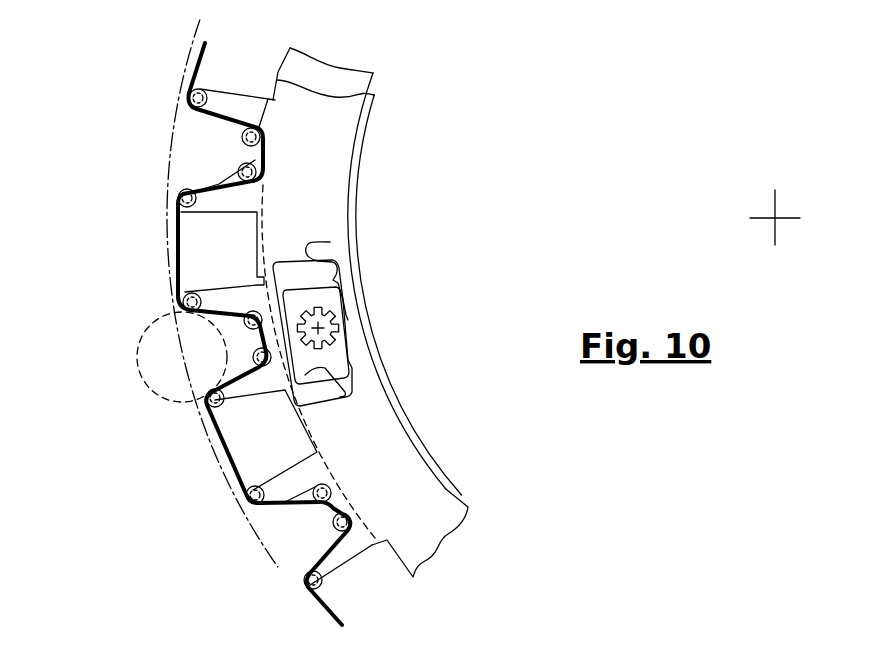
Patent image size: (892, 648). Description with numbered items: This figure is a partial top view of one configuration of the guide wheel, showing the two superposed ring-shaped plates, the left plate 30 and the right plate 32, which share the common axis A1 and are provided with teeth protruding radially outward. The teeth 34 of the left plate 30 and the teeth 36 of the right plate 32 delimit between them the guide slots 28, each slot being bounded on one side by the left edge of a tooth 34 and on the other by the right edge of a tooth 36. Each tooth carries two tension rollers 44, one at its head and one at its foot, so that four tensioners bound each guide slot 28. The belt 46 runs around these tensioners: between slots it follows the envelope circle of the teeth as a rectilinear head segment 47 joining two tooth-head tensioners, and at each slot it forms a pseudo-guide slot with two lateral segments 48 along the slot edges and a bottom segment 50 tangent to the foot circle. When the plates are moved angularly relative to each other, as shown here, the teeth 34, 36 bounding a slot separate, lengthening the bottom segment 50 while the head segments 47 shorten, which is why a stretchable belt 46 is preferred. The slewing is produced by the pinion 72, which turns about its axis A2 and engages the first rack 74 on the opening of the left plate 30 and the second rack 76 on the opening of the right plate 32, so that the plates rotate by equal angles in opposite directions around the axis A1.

The guide slot 28 is at (190, 137).
The left plate 30 is at (455, 502).
The right plate 32 is at (420, 480).
The tooth of the left plate 34 is at (285, 485).
The tooth of the right plate 36 is at (347, 555).
The tension roller 44 is at (304, 586).
The belt 46 is at (179, 223).
The head segment 47 is at (181, 262).
The lateral segment 48 is at (232, 115).
The bottom segment 50 is at (260, 157).
The pinion 72 is at (307, 388).
The first rack 74 is at (330, 242).
The second rack 76 is at (347, 393).
The axis of the plates A1 is at (773, 217).
The axis of the control column A2 is at (320, 328).